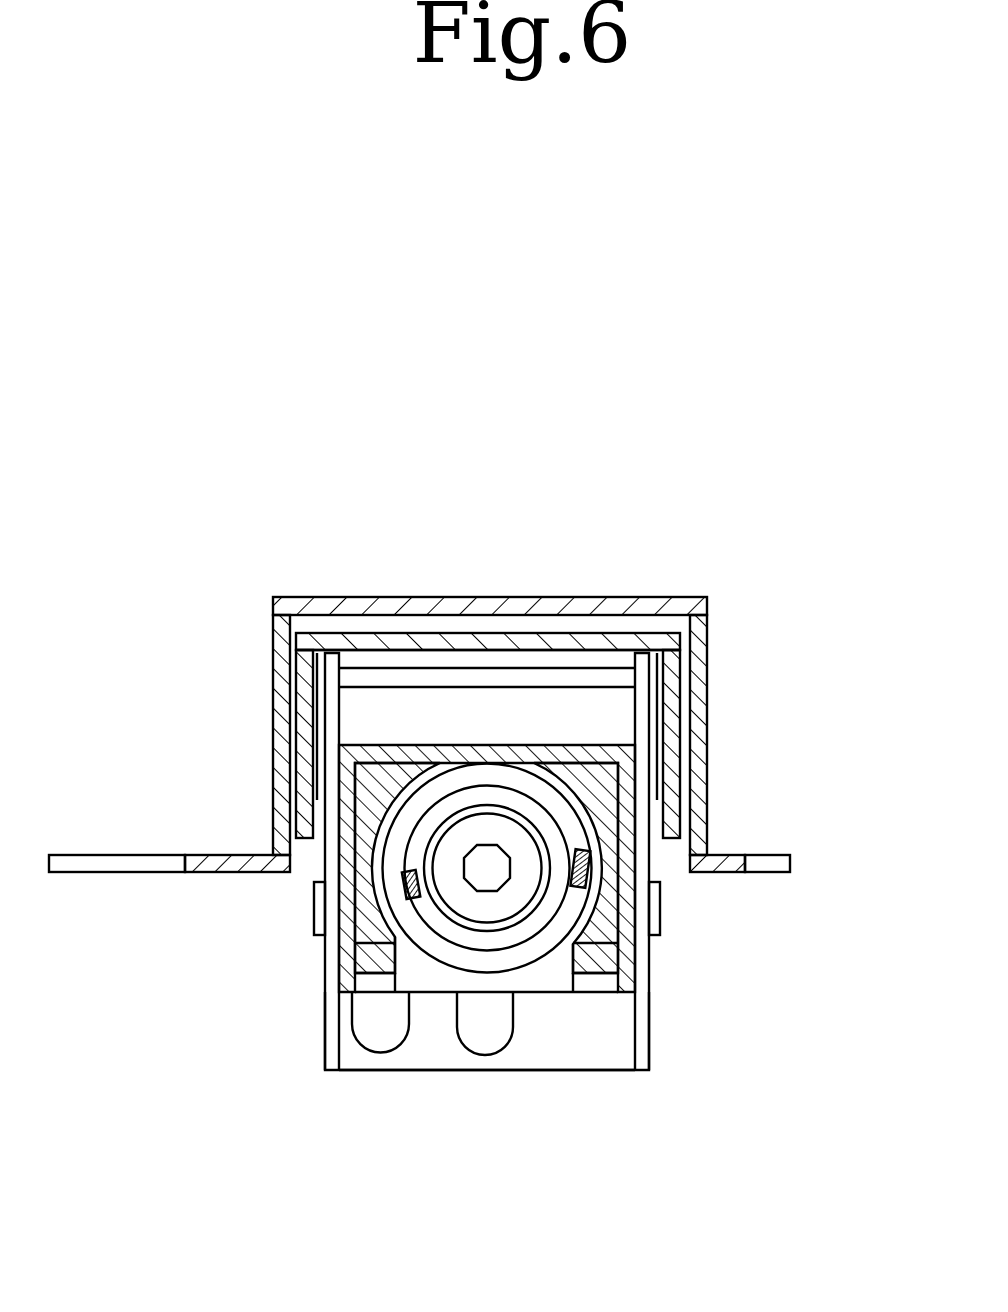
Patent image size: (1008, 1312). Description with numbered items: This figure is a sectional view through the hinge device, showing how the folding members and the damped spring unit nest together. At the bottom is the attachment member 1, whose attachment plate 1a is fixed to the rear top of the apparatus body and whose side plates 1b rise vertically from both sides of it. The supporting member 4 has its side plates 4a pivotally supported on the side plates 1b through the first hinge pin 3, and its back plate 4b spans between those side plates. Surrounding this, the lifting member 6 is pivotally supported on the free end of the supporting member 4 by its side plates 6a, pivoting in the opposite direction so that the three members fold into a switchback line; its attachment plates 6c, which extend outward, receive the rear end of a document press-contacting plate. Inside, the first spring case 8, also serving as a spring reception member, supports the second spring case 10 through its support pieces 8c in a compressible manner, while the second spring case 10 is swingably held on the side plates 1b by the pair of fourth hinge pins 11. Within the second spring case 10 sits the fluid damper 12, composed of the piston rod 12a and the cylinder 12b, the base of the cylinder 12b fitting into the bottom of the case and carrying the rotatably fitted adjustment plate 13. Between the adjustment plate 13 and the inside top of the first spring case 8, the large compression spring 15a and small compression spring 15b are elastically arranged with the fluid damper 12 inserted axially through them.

The attachment member 1 is at (500, 1078).
The attachment plate 1a is at (577, 1040).
The side plates 1b is at (330, 1030).
The first hinge pin 3 is at (662, 705).
The supporting member 4 is at (530, 628).
The side plates 4a is at (312, 748).
The back plate 4b is at (472, 640).
The lifting member 6 is at (396, 592).
The side plates 6a is at (286, 668).
The attachment plates 6c is at (265, 878).
The first spring case 8 is at (549, 742).
The support pieces 8c is at (380, 1000).
The second spring case 10 is at (597, 958).
The fourth hinge pins 11 is at (315, 918).
The fluid damper 12 is at (474, 906).
The piston rod 12a is at (488, 858).
The cylinder 12b is at (494, 905).
The adjustment plate 13 is at (545, 982).
The large compression spring 15a is at (601, 866).
The small compression spring 15b is at (406, 896).